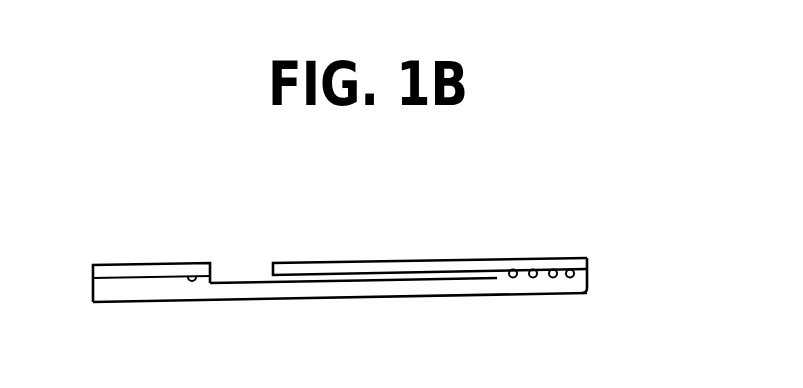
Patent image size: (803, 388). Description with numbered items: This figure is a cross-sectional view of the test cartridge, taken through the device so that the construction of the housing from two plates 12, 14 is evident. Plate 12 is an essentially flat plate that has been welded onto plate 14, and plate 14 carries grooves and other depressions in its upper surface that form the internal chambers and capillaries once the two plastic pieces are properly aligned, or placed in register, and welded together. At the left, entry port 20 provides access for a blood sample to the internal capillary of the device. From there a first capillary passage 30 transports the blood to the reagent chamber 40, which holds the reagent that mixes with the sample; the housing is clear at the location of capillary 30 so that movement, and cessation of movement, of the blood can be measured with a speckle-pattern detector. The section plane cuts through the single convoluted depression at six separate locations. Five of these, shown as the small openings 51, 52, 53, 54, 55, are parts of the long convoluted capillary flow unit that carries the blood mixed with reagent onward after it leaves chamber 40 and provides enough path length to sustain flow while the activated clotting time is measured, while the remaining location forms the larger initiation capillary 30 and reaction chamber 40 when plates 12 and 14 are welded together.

The entry port 20 is at (244, 258).
The plate 12 is at (587, 261).
The plate 14 is at (588, 274).
The first capillary passage 30 is at (320, 283).
The reagent chamber 40 is at (434, 281).
The capillary flow unit location 51 is at (192, 285).
The capillary flow unit location 52 is at (511, 280).
The capillary flow unit location 53 is at (531, 280).
The capillary flow unit location 54 is at (552, 280).
The capillary flow unit location 55 is at (572, 278).